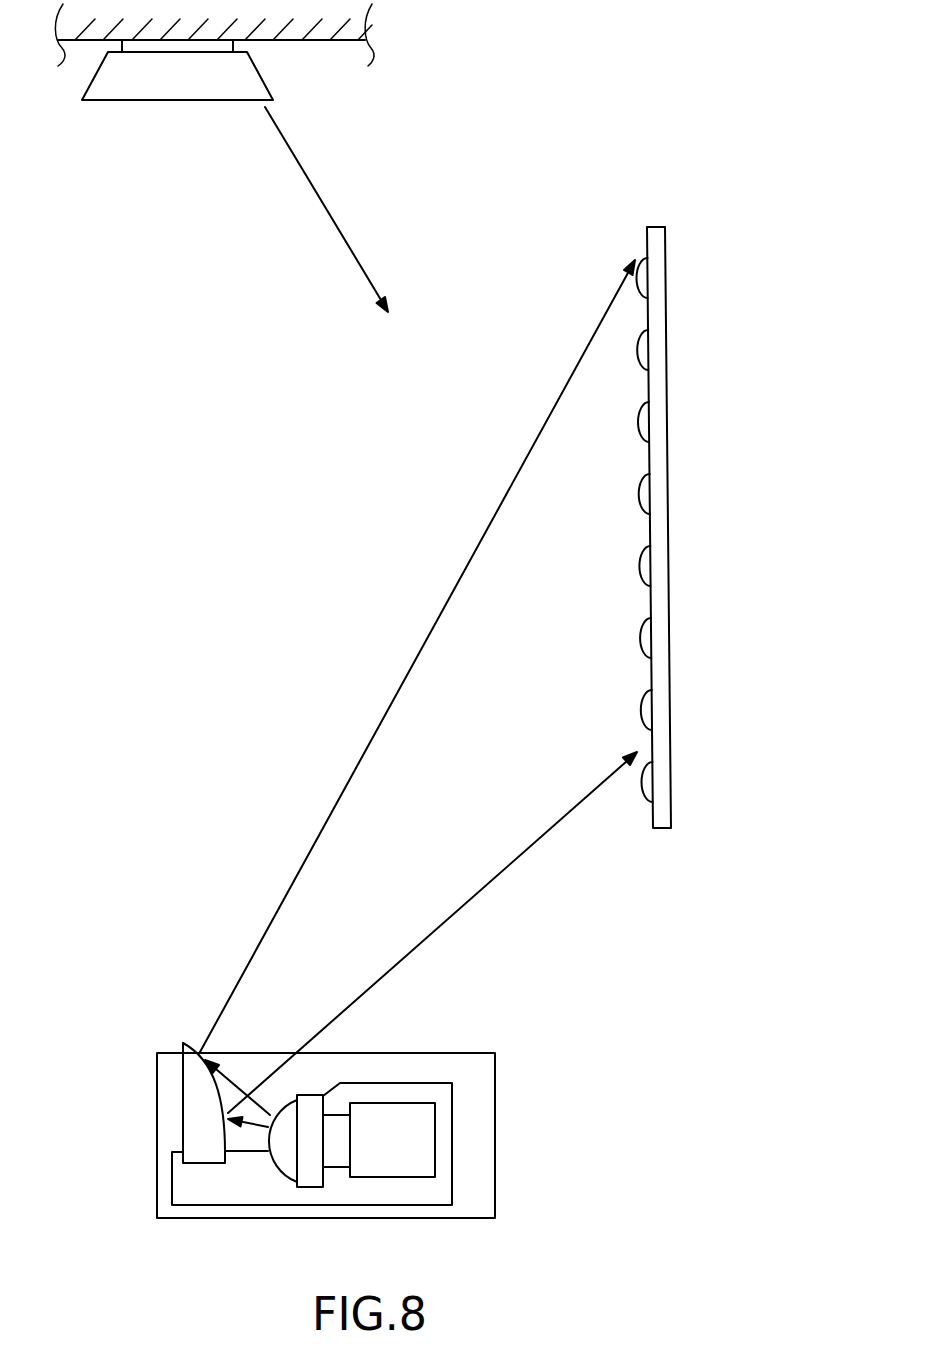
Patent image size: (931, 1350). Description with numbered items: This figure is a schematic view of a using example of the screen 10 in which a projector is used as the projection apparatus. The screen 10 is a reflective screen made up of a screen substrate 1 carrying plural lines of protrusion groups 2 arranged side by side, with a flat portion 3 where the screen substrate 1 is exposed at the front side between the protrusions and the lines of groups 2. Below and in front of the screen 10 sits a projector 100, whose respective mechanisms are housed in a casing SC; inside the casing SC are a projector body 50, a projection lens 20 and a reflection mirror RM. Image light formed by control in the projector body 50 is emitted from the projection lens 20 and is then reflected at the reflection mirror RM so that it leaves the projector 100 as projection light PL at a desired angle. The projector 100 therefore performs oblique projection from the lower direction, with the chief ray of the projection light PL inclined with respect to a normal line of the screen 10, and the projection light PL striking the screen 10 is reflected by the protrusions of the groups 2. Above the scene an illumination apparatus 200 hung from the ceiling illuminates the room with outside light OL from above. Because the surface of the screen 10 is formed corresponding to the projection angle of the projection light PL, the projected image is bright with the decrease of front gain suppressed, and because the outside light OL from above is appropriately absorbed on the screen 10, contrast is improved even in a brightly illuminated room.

The illumination apparatus 200 is at (82, 128).
The outside light OL is at (325, 203).
The screen 10 is at (668, 186).
The screen substrate 1 is at (663, 255).
The protrusion groups 2 is at (641, 420).
The flat portion 3 is at (647, 245).
The projection light PL is at (300, 878).
The projector 100 is at (523, 1040).
The casing SC is at (495, 1095).
The projector body 50 is at (453, 1175).
The reflection mirror RM is at (193, 1043).
The projection lens 20 is at (370, 1100).